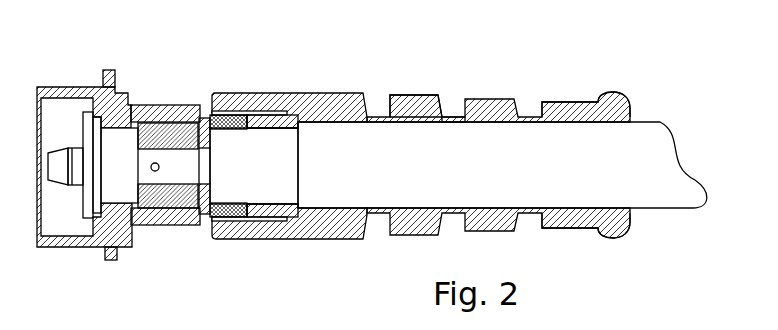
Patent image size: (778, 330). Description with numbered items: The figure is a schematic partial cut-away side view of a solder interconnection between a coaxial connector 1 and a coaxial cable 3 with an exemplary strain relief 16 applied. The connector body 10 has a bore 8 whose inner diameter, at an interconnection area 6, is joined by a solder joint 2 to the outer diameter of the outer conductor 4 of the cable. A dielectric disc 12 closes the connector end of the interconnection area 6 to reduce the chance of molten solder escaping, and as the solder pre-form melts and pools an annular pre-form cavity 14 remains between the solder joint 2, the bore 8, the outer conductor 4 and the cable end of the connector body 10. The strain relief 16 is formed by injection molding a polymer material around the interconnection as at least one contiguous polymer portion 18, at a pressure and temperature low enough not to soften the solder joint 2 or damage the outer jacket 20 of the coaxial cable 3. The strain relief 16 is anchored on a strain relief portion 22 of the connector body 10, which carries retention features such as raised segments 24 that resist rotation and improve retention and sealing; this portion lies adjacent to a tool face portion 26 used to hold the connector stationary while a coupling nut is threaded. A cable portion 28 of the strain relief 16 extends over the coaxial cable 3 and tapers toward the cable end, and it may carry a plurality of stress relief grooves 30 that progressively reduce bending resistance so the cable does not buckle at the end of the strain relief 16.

The coaxial connector 1 is at (64, 87).
The connector body 10 is at (109, 70).
The bore 8 is at (128, 147).
The dielectric disc 12 is at (202, 116).
The solder joint 2 is at (226, 117).
The interconnection area 6 is at (241, 117).
The annular pre-form cavity 14 is at (268, 116).
The outer conductor 4 is at (287, 157).
The strain relief 16 is at (368, 118).
The outer jacket 20 is at (407, 118).
The stress relief grooves 30 is at (455, 118).
The coaxial cable 3 is at (518, 138).
The contiguous polymer portion 18 is at (570, 112).
The cable portion 28 is at (567, 227).
The tool face portion 26 is at (175, 225).
The strain relief portion 22 is at (240, 216).
The raised segments 24 is at (278, 212).